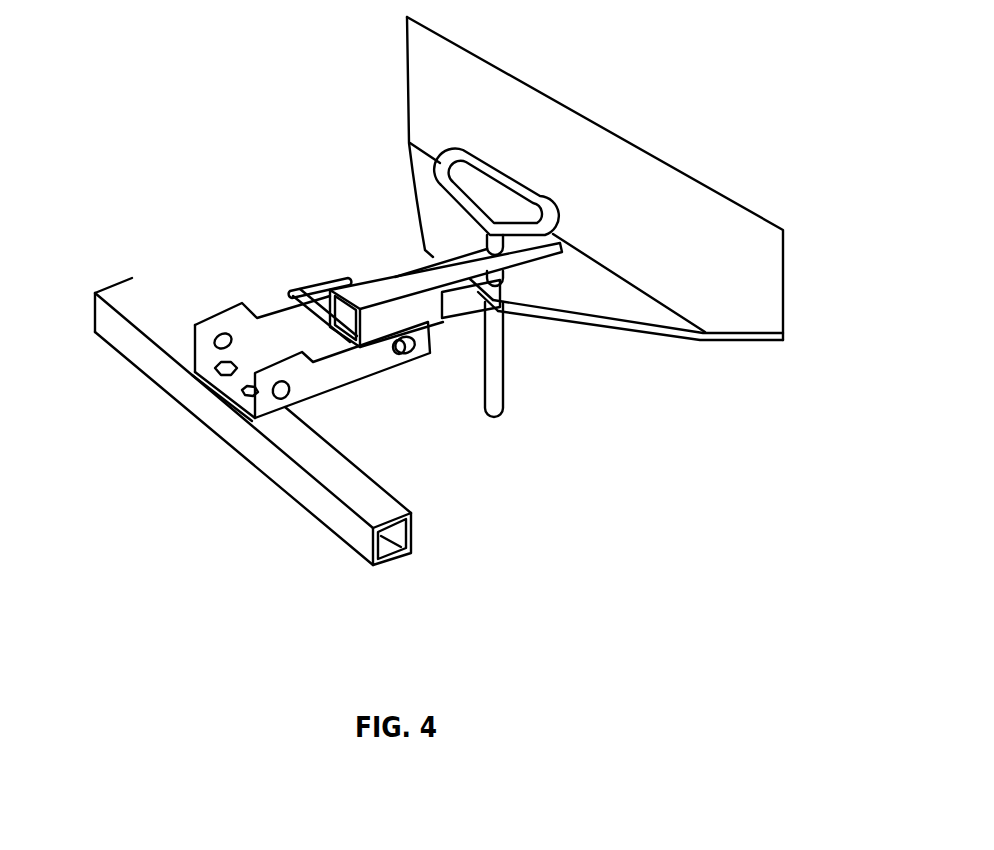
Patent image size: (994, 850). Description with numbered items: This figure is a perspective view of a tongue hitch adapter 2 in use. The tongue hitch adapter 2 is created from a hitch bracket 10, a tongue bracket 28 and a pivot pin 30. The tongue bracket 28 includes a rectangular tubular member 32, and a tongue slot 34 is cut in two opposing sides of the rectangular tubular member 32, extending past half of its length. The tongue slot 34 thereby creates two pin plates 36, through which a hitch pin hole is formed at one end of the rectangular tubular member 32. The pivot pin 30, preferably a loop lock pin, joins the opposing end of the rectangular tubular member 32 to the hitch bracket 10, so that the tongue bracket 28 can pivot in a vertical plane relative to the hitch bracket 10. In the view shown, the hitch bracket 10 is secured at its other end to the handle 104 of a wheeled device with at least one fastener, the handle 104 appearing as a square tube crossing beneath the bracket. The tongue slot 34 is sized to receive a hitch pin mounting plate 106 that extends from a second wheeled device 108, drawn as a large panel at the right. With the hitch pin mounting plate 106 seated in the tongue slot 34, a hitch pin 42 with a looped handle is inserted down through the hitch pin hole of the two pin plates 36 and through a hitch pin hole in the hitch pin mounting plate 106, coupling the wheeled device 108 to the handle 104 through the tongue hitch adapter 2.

The tongue hitch adapter 2 is at (430, 435).
The hitch bracket 10 is at (342, 397).
The tongue bracket 28 is at (483, 311).
The pivot pin 30 is at (292, 292).
The rectangular tubular member 32 is at (395, 293).
The tongue slot 34 is at (455, 304).
The pin plates 36 is at (532, 262).
The hitch pin 42 is at (550, 236).
The handle 104 is at (145, 470).
The hitch pin mounting plate 106 is at (617, 305).
The wheeled device 108 is at (742, 272).